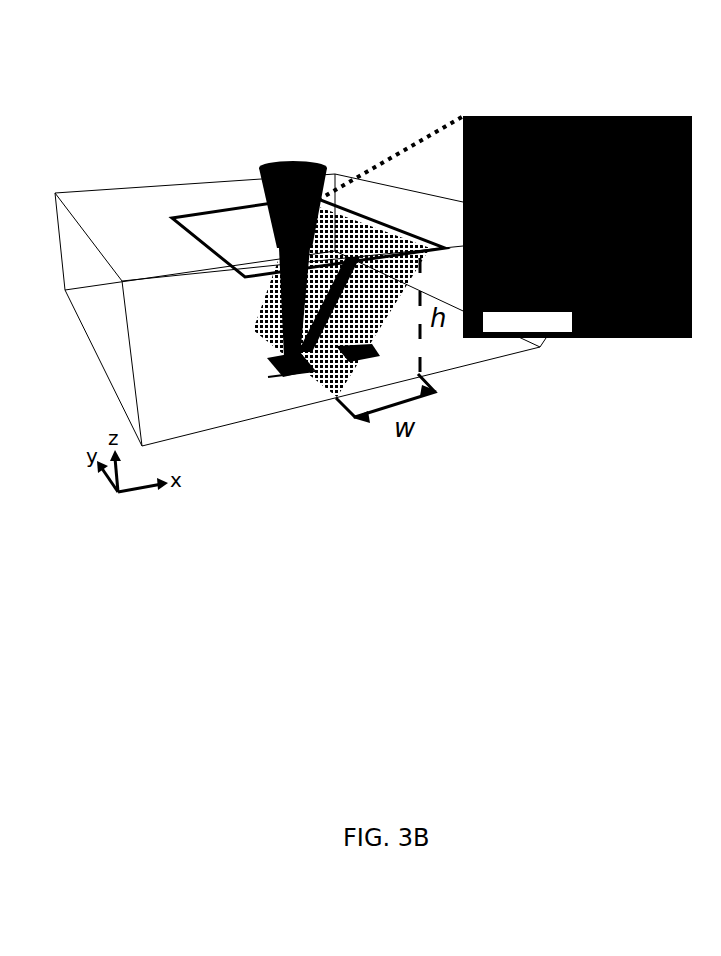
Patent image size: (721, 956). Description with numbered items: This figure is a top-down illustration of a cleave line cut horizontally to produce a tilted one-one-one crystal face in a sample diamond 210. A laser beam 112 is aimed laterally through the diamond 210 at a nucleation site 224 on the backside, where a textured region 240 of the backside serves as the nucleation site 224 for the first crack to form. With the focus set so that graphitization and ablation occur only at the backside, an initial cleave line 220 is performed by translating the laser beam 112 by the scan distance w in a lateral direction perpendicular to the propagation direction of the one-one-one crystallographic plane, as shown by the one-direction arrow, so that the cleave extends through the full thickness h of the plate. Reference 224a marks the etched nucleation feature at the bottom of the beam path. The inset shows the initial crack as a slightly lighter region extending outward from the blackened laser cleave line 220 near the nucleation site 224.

The diamond 210 is at (146, 188).
The laser beam 112 is at (295, 160).
The initial cleave line 220 is at (347, 256).
The nucleation site 224 is at (536, 250).
The etched square 224a is at (262, 358).
The bottom of etched feature 240 is at (290, 386).